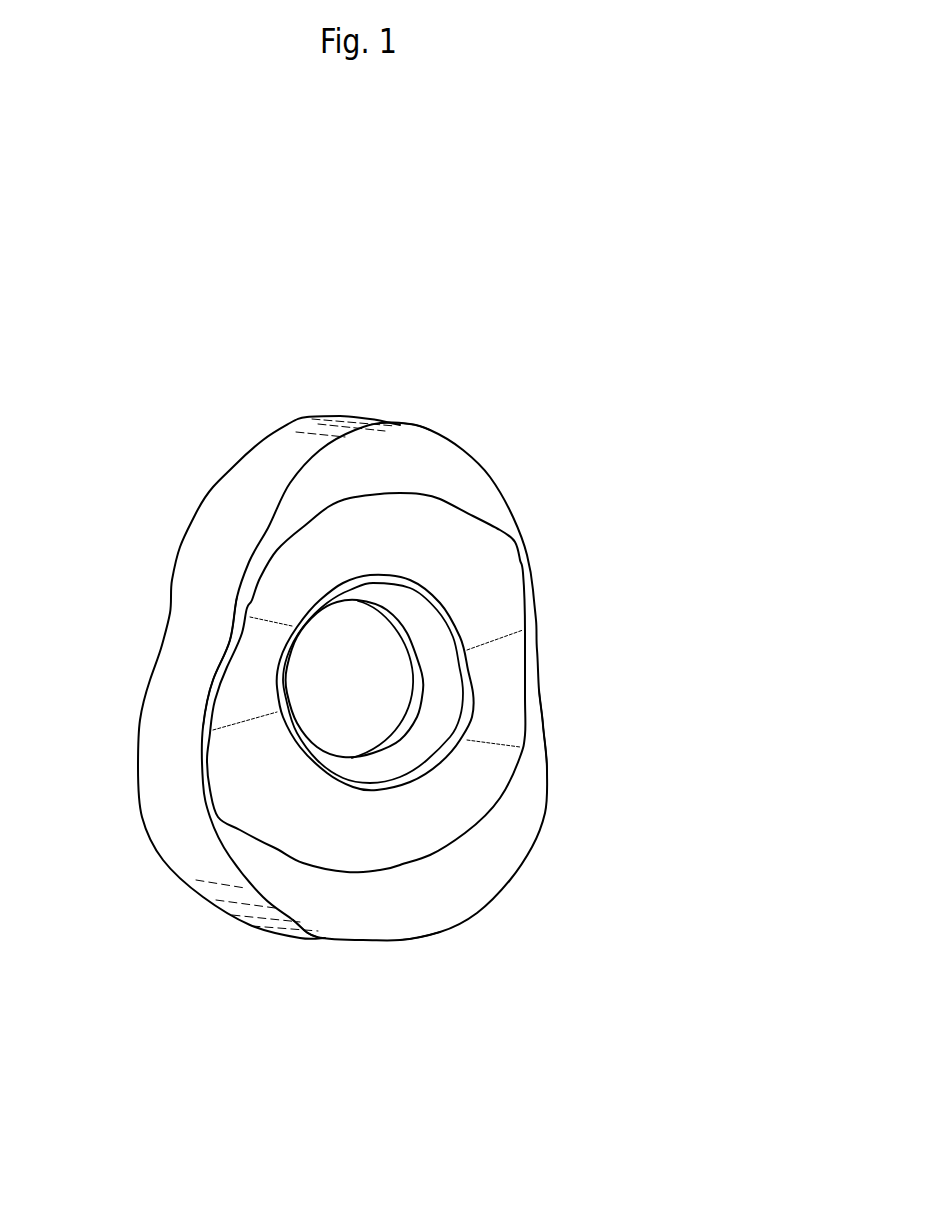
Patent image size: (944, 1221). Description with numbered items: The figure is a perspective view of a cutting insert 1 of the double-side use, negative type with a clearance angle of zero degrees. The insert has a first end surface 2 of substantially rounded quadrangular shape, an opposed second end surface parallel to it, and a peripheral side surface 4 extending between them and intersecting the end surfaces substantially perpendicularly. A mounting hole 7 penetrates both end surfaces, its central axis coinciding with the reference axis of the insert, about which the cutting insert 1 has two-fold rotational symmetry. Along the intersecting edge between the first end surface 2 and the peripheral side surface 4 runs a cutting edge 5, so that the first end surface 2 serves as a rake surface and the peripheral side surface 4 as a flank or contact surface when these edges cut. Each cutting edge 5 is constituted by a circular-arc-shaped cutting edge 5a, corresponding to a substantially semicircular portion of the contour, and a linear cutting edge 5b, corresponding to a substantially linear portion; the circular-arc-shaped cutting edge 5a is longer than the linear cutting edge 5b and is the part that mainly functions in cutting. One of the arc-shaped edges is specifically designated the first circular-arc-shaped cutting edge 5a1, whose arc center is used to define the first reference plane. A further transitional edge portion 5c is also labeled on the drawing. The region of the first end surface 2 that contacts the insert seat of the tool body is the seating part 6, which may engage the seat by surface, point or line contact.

The cutting insert 1 is at (531, 321).
The first end surface 2 is at (288, 508).
The peripheral side surface 4 is at (170, 710).
The cutting edge 5 is at (256, 528).
The circular-arc-shaped cutting edge 5a is at (313, 460).
The first circular-arc-shaped cutting edge 5a1 is at (503, 890).
The linear cutting edge 5b is at (235, 598).
The top surface 5c is at (433, 431).
The seating part 6 is at (456, 572).
The mounting hole 7 is at (447, 677).